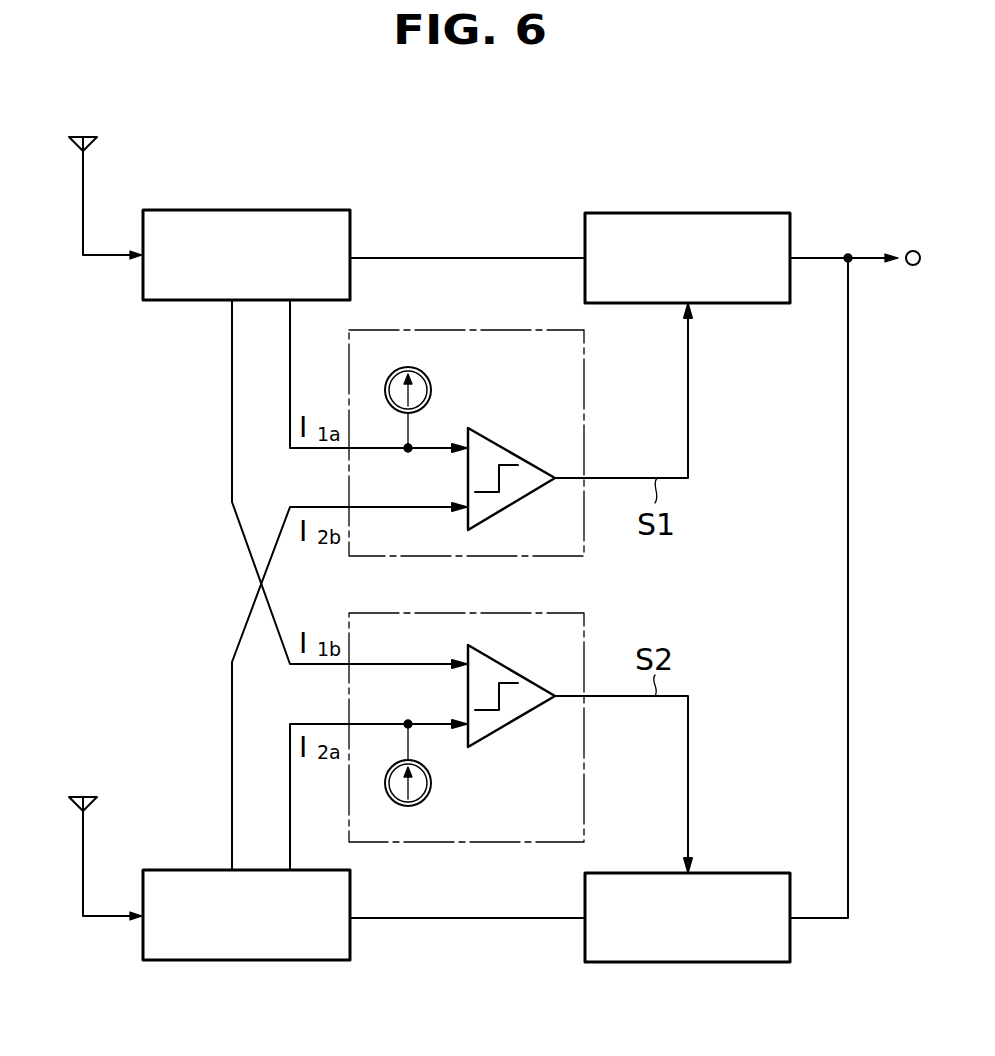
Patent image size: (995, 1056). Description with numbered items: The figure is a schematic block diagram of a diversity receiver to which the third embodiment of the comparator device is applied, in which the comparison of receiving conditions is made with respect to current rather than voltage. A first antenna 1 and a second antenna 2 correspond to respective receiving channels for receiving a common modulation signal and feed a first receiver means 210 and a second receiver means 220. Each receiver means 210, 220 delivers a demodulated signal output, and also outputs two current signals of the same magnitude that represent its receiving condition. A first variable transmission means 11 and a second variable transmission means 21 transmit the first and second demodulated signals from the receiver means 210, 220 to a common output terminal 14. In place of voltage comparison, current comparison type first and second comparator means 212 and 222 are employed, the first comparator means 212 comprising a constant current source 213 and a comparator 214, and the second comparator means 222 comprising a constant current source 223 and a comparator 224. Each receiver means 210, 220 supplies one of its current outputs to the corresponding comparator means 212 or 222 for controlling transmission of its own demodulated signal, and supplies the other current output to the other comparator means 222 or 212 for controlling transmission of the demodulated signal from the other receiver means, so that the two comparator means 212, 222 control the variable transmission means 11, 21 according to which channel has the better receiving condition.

The first antenna 1 is at (88, 137).
The second antenna 2 is at (88, 797).
The first receiver means 210 is at (238, 210).
The second receiver means 220 is at (253, 960).
The first variable transmission means 11 is at (688, 213).
The second variable transmission means 21 is at (688, 962).
The common output terminal 14 is at (913, 251).
The first comparator means 212 is at (510, 330).
The constant current source 213 is at (432, 385).
The comparator 214 is at (518, 456).
The second comparator means 222 is at (520, 842).
The constant current source 223 is at (432, 790).
The comparator 224 is at (515, 720).